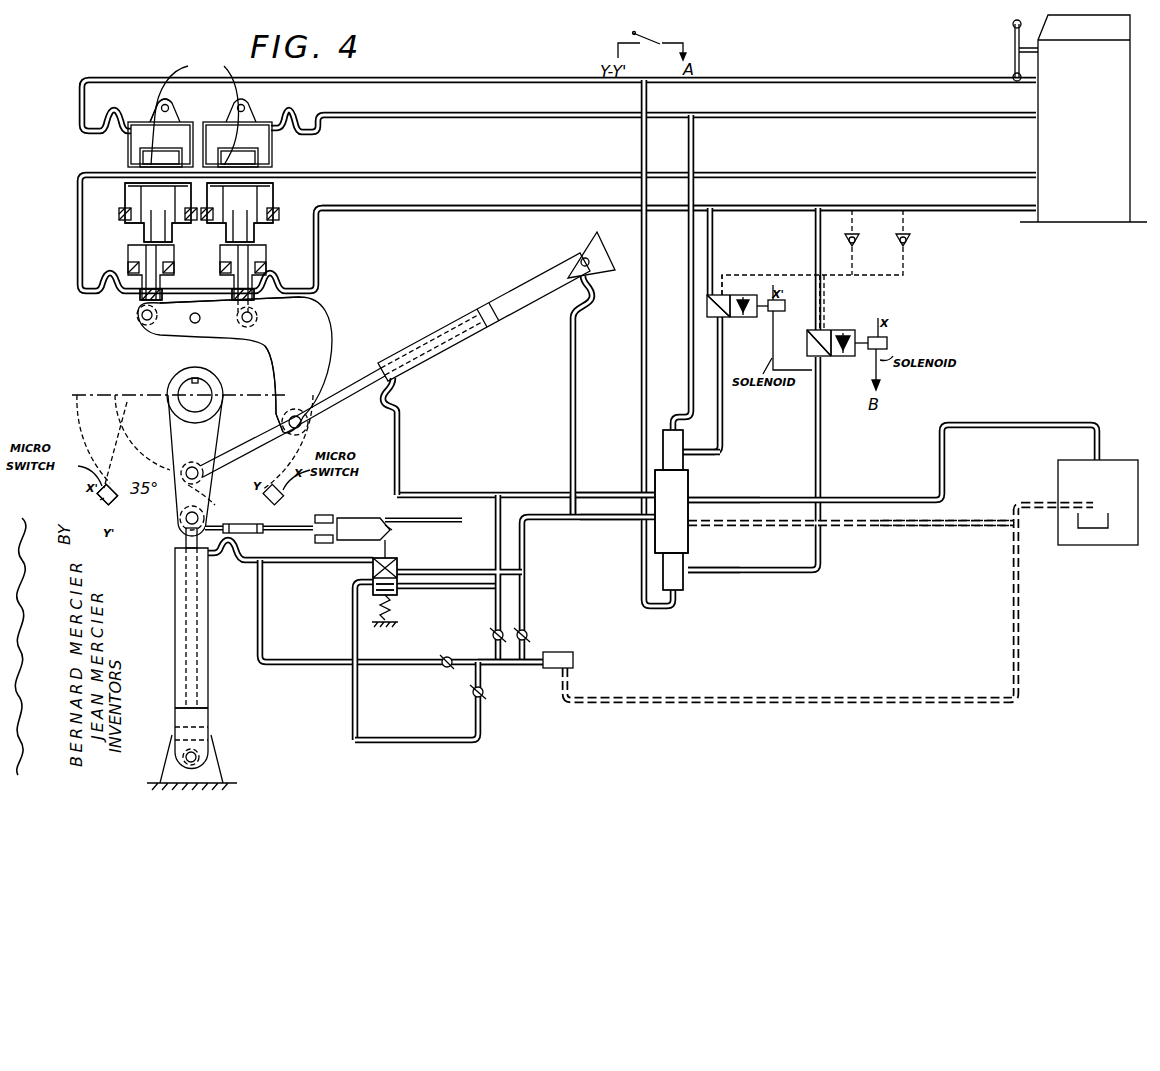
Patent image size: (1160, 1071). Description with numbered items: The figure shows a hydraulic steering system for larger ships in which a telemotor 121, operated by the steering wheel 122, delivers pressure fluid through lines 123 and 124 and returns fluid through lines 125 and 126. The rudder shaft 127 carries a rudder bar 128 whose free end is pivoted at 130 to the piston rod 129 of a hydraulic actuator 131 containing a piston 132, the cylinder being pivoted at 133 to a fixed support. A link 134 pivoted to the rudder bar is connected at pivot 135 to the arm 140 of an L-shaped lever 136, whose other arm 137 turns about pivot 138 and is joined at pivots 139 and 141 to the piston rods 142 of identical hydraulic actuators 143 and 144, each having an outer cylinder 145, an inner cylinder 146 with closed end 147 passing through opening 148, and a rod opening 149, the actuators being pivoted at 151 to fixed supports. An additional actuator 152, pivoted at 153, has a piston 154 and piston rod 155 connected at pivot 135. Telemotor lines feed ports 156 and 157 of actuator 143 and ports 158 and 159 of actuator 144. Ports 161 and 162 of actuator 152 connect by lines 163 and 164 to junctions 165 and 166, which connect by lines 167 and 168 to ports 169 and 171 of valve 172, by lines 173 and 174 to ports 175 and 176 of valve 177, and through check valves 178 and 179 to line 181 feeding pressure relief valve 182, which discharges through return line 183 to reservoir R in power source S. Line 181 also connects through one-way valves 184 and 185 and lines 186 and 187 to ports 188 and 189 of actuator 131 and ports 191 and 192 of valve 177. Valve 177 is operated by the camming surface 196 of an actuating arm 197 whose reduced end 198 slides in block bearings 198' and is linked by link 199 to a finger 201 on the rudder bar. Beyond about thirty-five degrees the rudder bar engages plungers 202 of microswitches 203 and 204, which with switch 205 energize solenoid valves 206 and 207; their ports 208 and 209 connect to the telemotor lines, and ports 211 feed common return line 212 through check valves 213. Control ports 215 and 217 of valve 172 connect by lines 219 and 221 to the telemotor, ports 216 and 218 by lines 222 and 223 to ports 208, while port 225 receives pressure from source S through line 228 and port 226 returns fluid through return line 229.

The telemotor 121 is at (1094, 153).
The steering wheel 122 is at (1013, 65).
The line 123 is at (878, 80).
The line 124 is at (978, 176).
The line 125 is at (893, 119).
The line 126 is at (1000, 214).
The rudder shaft 127 is at (186, 392).
The rudder bar 128 is at (172, 431).
The piston rod 129 is at (186, 540).
The pivot 130 is at (185, 522).
The hydraulic actuator 131 is at (174, 621).
The piston 132 is at (205, 716).
The pivot 133 is at (185, 760).
The link 134 is at (245, 448).
The pivot 135 is at (303, 426).
The L-shaped lever 136 is at (326, 313).
The arm 137 is at (223, 332).
The pivot 138 is at (190, 326).
The pivot 139 is at (140, 323).
The arm 140 is at (320, 372).
The pivot 141 is at (255, 323).
The piston rod 142 is at (232, 290).
The hydraulic actuator 143 is at (118, 236).
The hydraulic actuator 144 is at (283, 206).
The outer cylinder 145 is at (128, 132).
The inner cylinder 146 is at (140, 166).
The closed end 147 is at (168, 114).
The opening 148 is at (125, 210).
The opening 149 is at (176, 272).
The pivotal mounting 151 is at (226, 72).
The additional actuator 152 is at (464, 310).
The pivot 153 is at (580, 258).
The piston 154 is at (496, 325).
The piston rod 155 is at (445, 340).
The port 156 is at (152, 119).
The port 157 is at (140, 292).
The port 158 is at (272, 134).
The port 159 is at (255, 292).
The port 161 is at (590, 285).
The port 162 is at (403, 390).
The line 163 is at (576, 389).
The line 164 is at (400, 458).
The junction 165 is at (573, 520).
The junction 166 is at (505, 486).
The line 167 is at (613, 520).
The line 168 is at (603, 486).
The port 169 is at (672, 530).
The port 171 is at (672, 491).
The valve 172 is at (697, 538).
The line 173 is at (463, 588).
The line 174 is at (497, 512).
The port 175 is at (397, 592).
The port 176 is at (393, 558).
The valve 177 is at (403, 562).
The check valve 178 is at (528, 634).
The check valve 179 is at (492, 636).
The line 181 is at (510, 666).
The pressure relief valve 182 is at (566, 656).
The return line 183 is at (832, 697).
The one-way valve 184 is at (446, 668).
The one-way valve 185 is at (483, 698).
The line 186 is at (394, 666).
The line 187 is at (406, 720).
The port 188 is at (212, 562).
The port 189 is at (210, 730).
The port 191 is at (384, 556).
The port 192 is at (353, 590).
The camming surface 196 is at (392, 516).
The actuating arm 197 is at (361, 521).
The reduced width end 198 is at (423, 512).
The block bearings 198' is at (334, 517).
The link 199 is at (232, 518).
The finger 201 is at (212, 532).
The plunger 202 is at (115, 500).
The microswitch 203 is at (272, 504).
The microswitch 204 is at (100, 496).
The switch 205 is at (632, 32).
The solenoid valve 206 is at (837, 326).
The solenoid valve 207 is at (741, 283).
The port 208 is at (730, 317).
The port 209 is at (707, 298).
The port 211 is at (722, 292).
The common return line 212 is at (782, 274).
The check valve 213 is at (860, 240).
The control port 215 is at (672, 428).
The control port 216 is at (688, 455).
The control port 217 is at (678, 593).
The control port 218 is at (690, 573).
The line 219 is at (690, 330).
The line 221 is at (640, 226).
The line 222 is at (723, 413).
The line 223 is at (783, 573).
The port 225 is at (700, 500).
The port 226 is at (700, 522).
The line 228 is at (892, 480).
The return line 229 is at (888, 526).
The power source S is at (1117, 462).
The reservoir R is at (1093, 528).